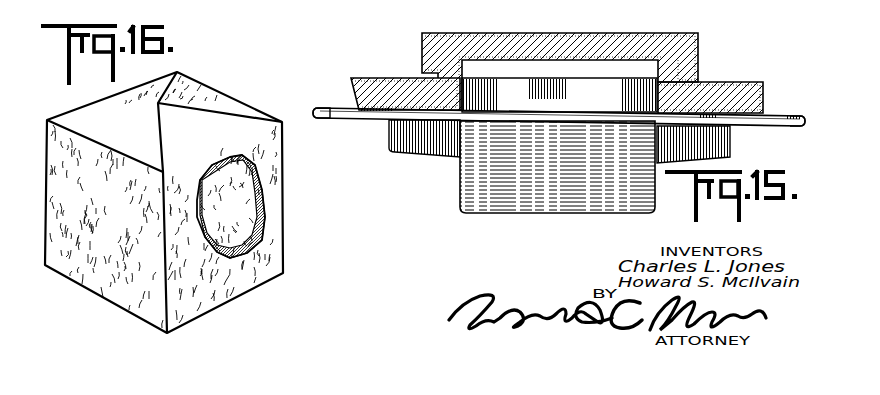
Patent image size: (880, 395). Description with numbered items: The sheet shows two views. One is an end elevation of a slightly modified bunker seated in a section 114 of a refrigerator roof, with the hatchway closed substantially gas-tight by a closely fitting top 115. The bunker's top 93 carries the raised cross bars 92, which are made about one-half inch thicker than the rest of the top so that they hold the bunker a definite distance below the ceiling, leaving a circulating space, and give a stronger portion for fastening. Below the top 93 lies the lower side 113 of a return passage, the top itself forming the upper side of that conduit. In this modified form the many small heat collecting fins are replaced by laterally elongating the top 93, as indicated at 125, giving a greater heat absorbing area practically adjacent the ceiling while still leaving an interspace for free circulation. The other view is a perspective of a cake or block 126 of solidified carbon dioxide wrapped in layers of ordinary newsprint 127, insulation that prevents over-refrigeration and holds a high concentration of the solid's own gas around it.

In FIG. 15, the cross bars 92 is at (333, 108).
In FIG. 15, the top 93 is at (547, 117).
In FIG. 15, the lower side 113 is at (385, 153).
In FIG. 15, the section of the roof 114 is at (750, 75).
In FIG. 15, the top 115 is at (698, 43).
In FIG. 15, the laterally elongated top portion 125 is at (333, 120).
In FIG. 16, the cake or block of solidified carbon dioxide 126 is at (263, 222).
In FIG. 16, the newsprint 127 is at (252, 255).